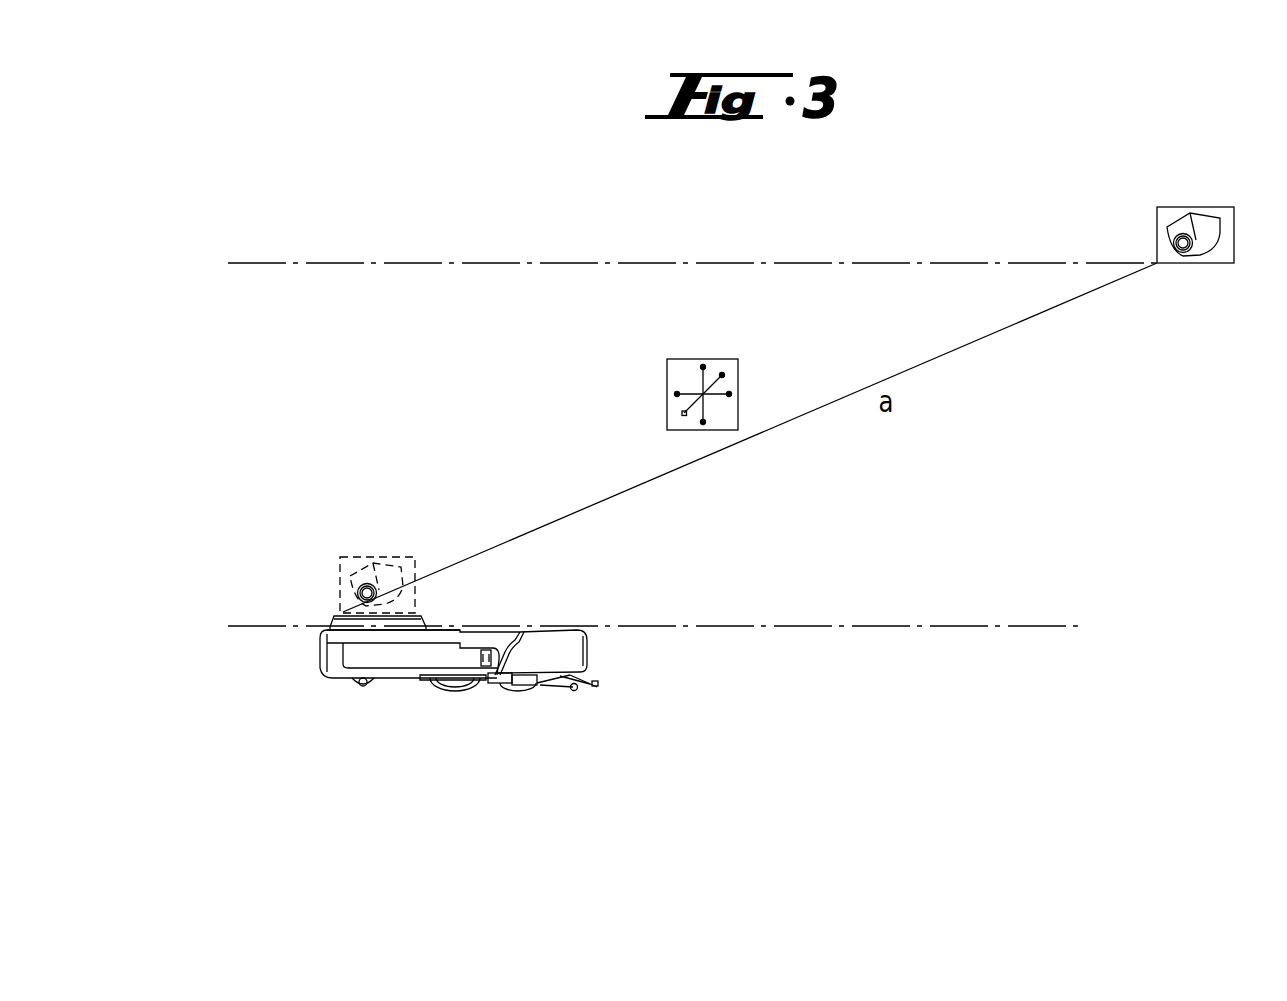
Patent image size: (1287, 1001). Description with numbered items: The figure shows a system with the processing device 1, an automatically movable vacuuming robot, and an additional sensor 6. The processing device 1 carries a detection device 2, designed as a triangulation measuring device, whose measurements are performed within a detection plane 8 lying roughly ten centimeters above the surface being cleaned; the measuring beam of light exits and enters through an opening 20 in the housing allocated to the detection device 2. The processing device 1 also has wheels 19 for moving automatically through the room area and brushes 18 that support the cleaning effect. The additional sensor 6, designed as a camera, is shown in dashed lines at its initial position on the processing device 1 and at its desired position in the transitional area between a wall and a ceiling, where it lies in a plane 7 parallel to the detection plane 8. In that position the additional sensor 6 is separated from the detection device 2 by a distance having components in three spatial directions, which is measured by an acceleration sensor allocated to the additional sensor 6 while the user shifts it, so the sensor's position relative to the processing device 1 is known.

The processing device 1 is at (392, 737).
The detection device 2 is at (336, 620).
The additional sensor 6 is at (1212, 228).
The plane 7 is at (580, 263).
The detection plane 8 is at (893, 627).
The brushes 18 is at (592, 686).
The wheels 19 is at (452, 688).
The opening 20 is at (374, 650).